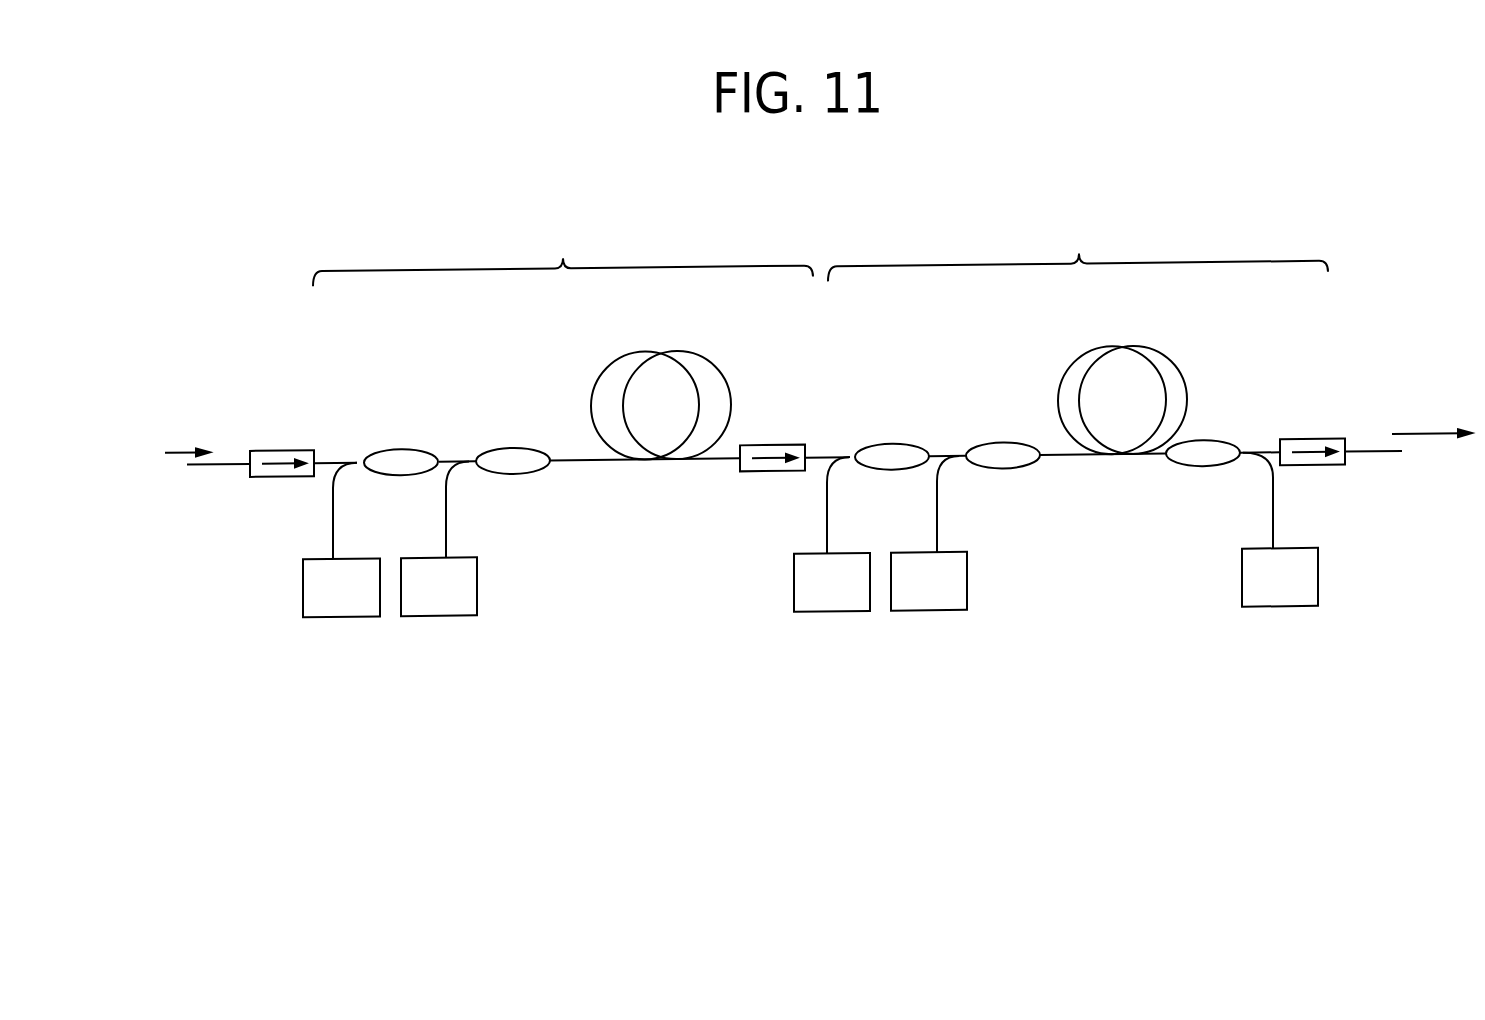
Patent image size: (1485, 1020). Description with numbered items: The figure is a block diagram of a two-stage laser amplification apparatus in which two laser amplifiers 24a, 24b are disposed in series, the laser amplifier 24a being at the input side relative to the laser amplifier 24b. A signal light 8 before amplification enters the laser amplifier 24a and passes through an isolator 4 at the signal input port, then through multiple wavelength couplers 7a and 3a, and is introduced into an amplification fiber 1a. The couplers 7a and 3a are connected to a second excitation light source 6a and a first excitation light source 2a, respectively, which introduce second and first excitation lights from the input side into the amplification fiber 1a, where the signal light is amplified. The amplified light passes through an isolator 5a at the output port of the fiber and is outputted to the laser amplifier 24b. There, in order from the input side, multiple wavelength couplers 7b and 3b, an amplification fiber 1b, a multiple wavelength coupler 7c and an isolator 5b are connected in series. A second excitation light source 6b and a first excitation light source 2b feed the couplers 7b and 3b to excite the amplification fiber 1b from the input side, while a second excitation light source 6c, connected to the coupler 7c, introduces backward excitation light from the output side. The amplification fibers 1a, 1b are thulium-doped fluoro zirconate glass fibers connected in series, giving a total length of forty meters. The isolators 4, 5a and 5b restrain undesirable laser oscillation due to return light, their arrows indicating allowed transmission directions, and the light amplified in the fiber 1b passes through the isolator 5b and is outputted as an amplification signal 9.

The amplification fiber 1a is at (648, 355).
The amplification fiber 1b is at (1131, 355).
The first excitation light source 2a is at (440, 618).
The first excitation light source 2b is at (930, 618).
The multiple wavelength coupler 3a is at (514, 450).
The multiple wavelength coupler 3b is at (1003, 450).
The isolator 4 is at (293, 450).
The isolator 5a is at (786, 450).
The isolator 5b is at (1325, 450).
The second excitation light source 6a is at (342, 618).
The second excitation light source 6b is at (833, 618).
The second excitation light source 6c is at (1281, 618).
The multiple wavelength coupler 7a is at (402, 450).
The multiple wavelength coupler 7b is at (892, 450).
The multiple wavelength coupler 7c is at (1211, 450).
The signal light 8 is at (182, 450).
The amplification signal 9 is at (1416, 445).
The laser amplifier 24a is at (563, 252).
The laser amplifier 24b is at (1078, 248).